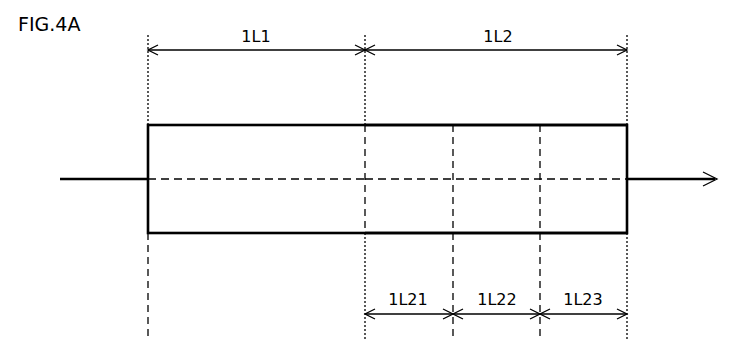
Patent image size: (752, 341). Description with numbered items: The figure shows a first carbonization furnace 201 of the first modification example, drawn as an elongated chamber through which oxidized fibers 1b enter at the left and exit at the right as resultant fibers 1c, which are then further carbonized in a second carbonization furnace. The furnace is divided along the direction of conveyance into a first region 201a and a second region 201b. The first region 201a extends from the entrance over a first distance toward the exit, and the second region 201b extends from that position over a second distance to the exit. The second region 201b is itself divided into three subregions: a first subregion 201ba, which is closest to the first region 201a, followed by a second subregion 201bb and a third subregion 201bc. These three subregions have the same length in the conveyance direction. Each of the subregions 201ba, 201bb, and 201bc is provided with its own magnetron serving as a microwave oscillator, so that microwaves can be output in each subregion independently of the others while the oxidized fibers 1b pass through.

The oxidized fibers 1b is at (87, 170).
The resultant fibers 1c is at (687, 170).
The first carbonization furnace 201 is at (146, 208).
The first region 201a is at (252, 147).
The second region 201b is at (495, 124).
The first subregion 201ba is at (409, 215).
The second subregion 201bb is at (496, 215).
The third subregion 201bc is at (583, 215).